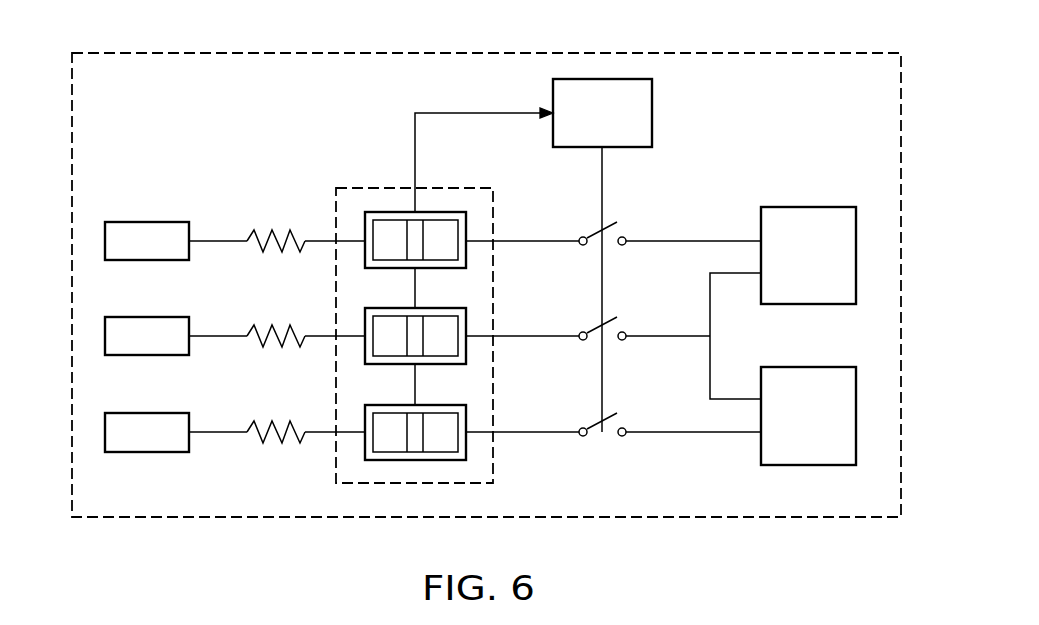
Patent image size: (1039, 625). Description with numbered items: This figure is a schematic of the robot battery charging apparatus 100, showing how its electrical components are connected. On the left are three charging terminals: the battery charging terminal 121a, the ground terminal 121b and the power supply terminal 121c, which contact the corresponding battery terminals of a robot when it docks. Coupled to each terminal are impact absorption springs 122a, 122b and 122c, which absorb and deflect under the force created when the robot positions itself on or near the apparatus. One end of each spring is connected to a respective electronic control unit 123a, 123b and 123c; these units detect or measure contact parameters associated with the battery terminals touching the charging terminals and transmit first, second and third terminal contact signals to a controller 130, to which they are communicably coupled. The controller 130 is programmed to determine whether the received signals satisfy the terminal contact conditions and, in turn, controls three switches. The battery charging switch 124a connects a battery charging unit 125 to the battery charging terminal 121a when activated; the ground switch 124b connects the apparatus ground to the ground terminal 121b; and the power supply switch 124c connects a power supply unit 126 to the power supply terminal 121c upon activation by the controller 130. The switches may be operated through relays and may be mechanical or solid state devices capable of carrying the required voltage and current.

The robot battery charging apparatus 100 is at (922, 127).
The battery charging terminal 121a is at (147, 222).
The ground terminal 121b is at (147, 317).
The power supply terminal 121c is at (147, 413).
The impact absorption spring 122a is at (272, 230).
The impact absorption spring 122b is at (272, 325).
The impact absorption spring 122c is at (272, 421).
The electronic control unit 123a is at (468, 218).
The electronic control unit 123b is at (466, 314).
The electronic control unit 123c is at (466, 411).
The battery charging switch 124a is at (623, 226).
The ground switch 124b is at (623, 321).
The power supply switch 124c is at (623, 418).
The battery charging unit 125 is at (808, 207).
The power supply unit 126 is at (808, 367).
The controller 130 is at (654, 121).